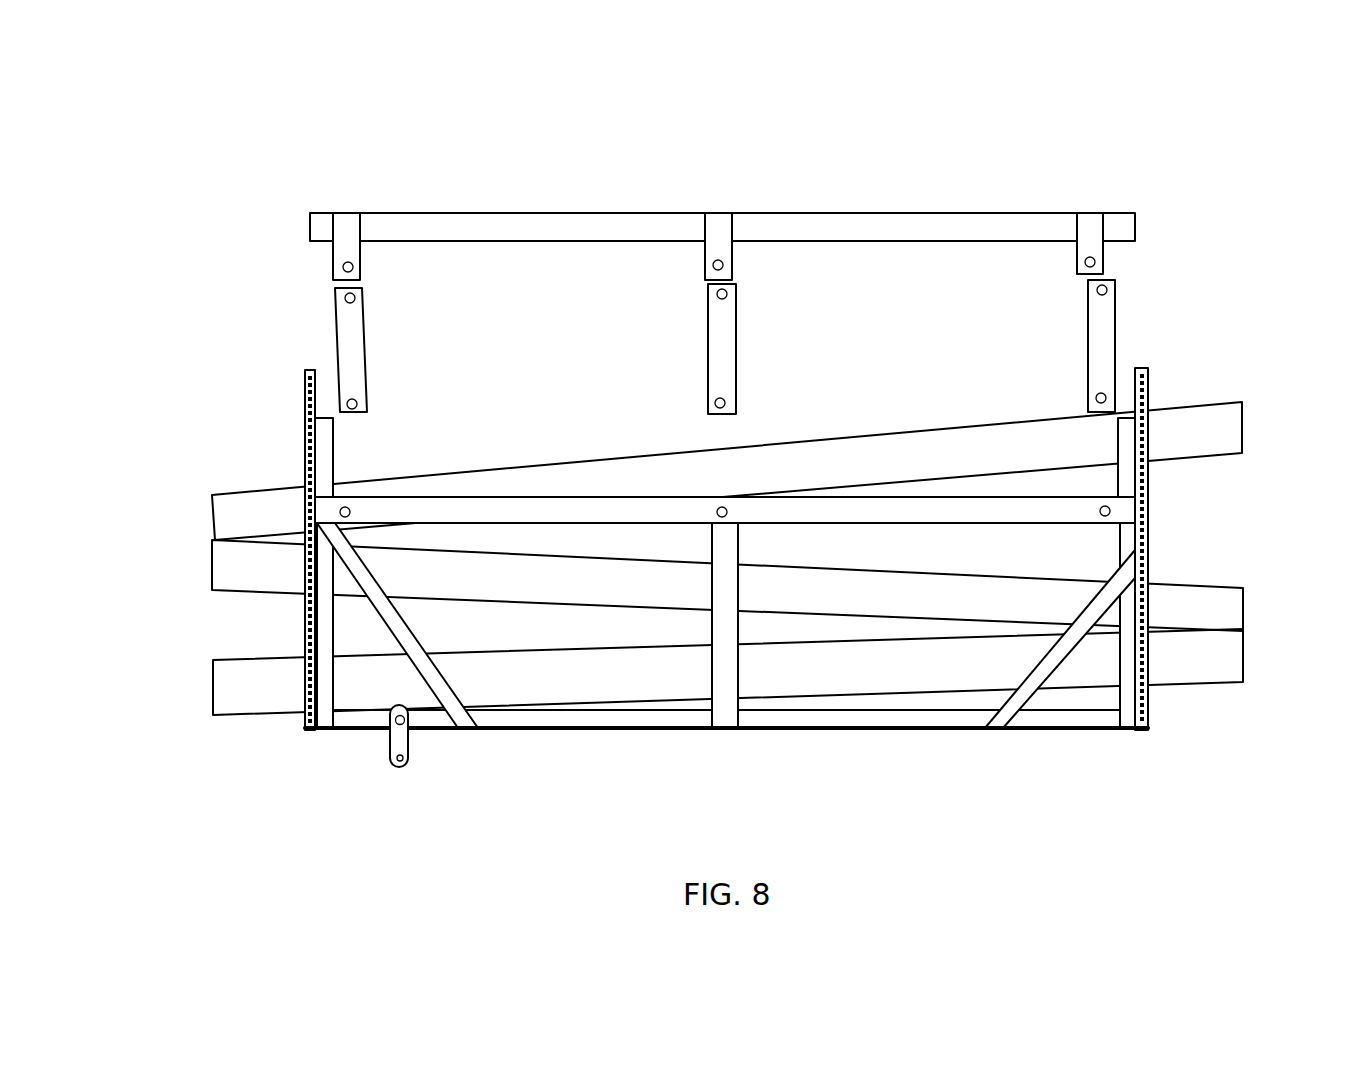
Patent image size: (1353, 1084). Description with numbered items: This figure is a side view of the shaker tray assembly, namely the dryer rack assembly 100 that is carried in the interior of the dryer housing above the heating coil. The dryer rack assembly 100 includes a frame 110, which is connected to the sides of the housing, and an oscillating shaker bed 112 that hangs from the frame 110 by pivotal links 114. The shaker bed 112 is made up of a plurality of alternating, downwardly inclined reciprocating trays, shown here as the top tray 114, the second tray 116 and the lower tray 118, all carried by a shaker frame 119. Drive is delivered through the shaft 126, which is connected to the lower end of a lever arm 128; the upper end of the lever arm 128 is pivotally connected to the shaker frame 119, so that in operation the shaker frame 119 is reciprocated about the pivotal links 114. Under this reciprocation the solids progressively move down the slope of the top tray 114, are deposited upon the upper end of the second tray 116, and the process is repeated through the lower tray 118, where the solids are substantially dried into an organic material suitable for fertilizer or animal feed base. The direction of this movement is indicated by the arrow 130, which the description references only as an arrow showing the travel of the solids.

The dryer rack assembly 100 is at (693, 448).
The frame 110 is at (930, 217).
The shaker bed 112 is at (640, 593).
The pivotal links 114 is at (1095, 338).
The second tray 116 is at (227, 570).
The lower tray 118 is at (1198, 663).
The shaker frame 119 is at (1095, 720).
The shaft 126 is at (408, 753).
The lever arm 128 is at (398, 739).
The direction arrow 130 is at (205, 688).